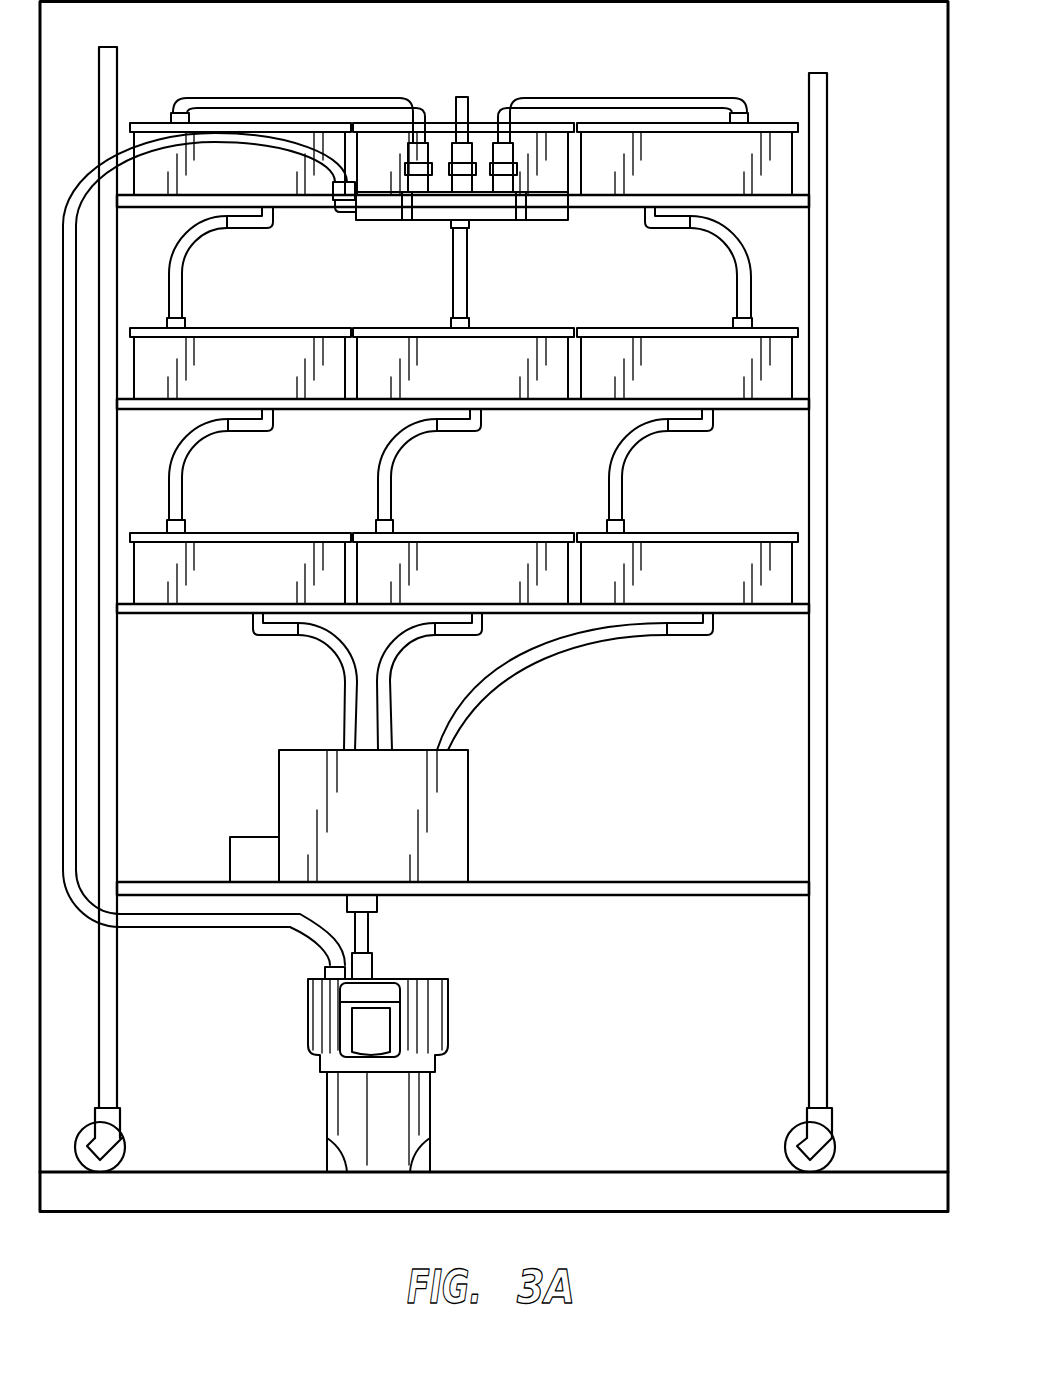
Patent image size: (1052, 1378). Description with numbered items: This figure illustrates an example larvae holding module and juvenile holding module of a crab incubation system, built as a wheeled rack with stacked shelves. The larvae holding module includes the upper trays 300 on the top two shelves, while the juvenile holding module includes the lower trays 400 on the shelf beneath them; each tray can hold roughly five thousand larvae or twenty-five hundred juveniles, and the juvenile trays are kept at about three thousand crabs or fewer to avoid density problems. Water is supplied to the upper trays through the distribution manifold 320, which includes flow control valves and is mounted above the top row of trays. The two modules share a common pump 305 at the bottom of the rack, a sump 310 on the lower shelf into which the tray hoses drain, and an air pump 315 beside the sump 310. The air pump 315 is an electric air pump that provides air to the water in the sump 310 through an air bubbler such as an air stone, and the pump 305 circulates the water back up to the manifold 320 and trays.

The upper trays 300 is at (833, 125).
The lower trays 400 is at (833, 515).
The distribution manifold 320 is at (357, 93).
The sump 310 is at (468, 773).
The air pump 315 is at (265, 833).
The pump 305 is at (445, 977).